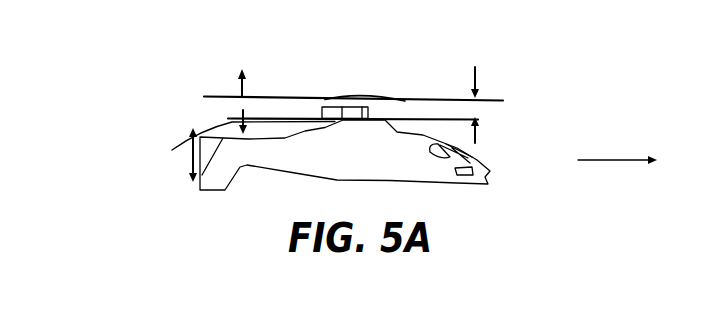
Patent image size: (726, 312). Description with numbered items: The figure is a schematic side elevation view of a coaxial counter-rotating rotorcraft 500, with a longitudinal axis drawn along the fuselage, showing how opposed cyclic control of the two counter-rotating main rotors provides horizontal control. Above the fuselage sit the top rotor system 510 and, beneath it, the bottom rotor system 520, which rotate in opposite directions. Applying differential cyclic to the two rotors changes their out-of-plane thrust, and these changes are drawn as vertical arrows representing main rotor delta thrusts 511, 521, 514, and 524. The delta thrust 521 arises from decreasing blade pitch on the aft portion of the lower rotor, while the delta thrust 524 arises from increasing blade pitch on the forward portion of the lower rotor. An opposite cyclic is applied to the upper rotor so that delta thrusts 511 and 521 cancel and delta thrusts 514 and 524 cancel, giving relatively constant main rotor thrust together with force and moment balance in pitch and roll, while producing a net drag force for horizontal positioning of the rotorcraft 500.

The coaxial rotorcraft 500 is at (128, 108).
The top rotor system 510 is at (288, 98).
The main rotor delta thrust 511 is at (238, 86).
The main rotor delta thrust 514 is at (478, 75).
The bottom rotor system 520 is at (398, 121).
The main rotor delta thrust 521 is at (193, 152).
The main rotor delta thrust 524 is at (482, 133).